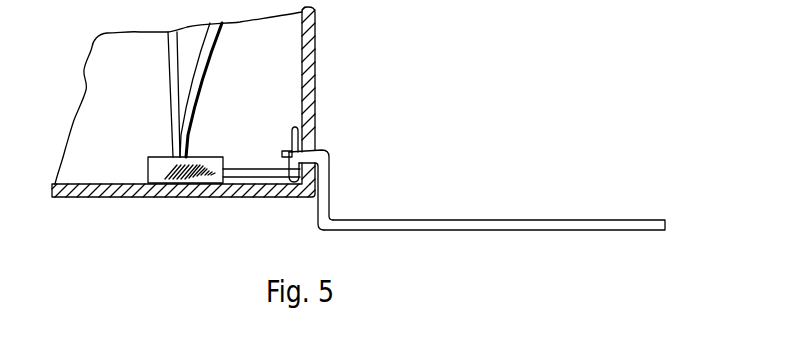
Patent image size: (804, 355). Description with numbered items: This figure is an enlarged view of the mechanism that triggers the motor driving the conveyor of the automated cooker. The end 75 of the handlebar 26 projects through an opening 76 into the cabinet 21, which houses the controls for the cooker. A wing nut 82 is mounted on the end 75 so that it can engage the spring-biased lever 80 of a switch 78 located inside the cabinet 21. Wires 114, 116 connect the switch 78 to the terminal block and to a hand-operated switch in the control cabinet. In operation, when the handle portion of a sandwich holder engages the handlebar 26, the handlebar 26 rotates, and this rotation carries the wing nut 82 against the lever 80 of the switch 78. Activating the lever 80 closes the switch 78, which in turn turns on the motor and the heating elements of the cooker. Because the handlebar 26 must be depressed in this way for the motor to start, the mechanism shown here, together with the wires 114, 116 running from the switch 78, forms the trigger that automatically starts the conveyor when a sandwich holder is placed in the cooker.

The wire 114 is at (173, 113).
The wire 116 is at (200, 88).
The switch 78 is at (212, 157).
The cabinet 21 is at (245, 124).
The spring-biased lever 80 is at (258, 169).
The wing nut 82 is at (295, 127).
The end of handlebar 75 is at (284, 151).
The opening 76 is at (320, 150).
The handlebar 26 is at (380, 219).